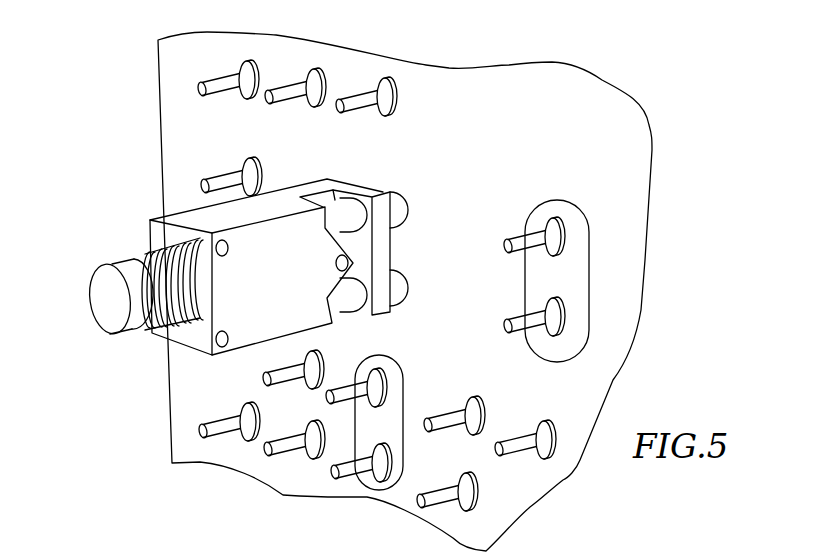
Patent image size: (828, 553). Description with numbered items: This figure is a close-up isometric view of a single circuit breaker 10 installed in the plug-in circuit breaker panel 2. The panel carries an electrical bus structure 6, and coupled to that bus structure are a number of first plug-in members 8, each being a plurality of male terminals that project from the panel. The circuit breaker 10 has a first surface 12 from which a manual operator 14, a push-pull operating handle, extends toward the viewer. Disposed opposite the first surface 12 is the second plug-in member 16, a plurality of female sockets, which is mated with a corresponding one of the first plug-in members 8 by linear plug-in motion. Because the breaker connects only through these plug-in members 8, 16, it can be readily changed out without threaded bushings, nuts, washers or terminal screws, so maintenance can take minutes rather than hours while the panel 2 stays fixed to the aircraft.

The plug-in circuit breaker panel 2 is at (133, 121).
The electrical bus structure 6 is at (518, 96).
The first plug-in members 8 is at (528, 232).
The circuit breaker 10 is at (253, 273).
The first surface 12 is at (193, 333).
The manual operator 14 is at (103, 312).
The second plug-in member 16 is at (393, 198).